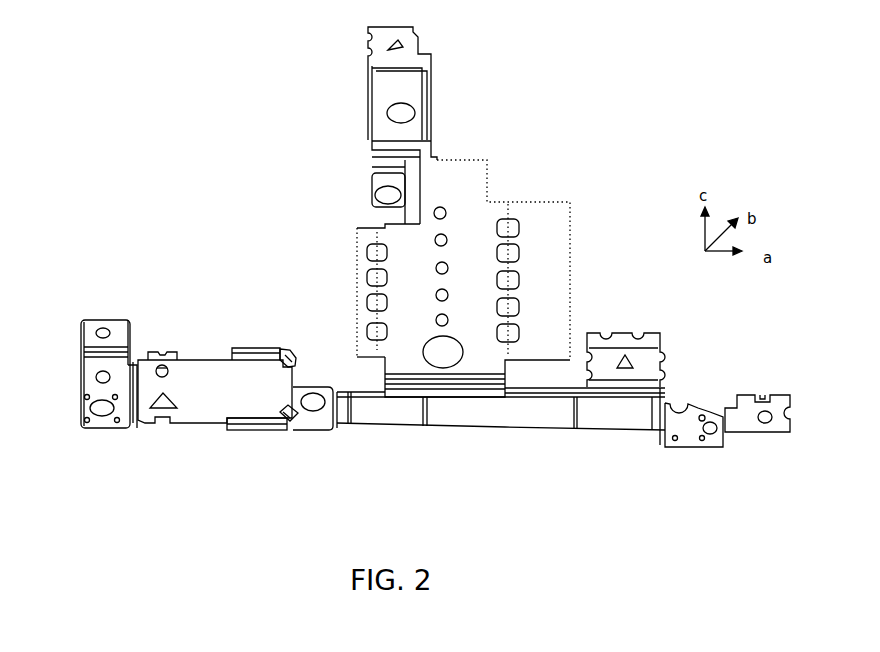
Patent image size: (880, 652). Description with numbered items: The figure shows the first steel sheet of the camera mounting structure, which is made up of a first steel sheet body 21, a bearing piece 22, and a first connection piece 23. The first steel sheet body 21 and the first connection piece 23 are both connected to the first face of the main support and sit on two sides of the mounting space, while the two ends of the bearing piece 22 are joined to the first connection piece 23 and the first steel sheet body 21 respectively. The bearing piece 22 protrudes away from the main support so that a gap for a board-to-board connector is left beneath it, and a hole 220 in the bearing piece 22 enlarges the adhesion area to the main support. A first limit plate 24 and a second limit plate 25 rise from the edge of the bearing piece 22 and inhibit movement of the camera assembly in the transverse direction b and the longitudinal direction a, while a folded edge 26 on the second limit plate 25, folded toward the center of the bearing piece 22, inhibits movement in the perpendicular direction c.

The first steel sheet body 21 is at (477, 193).
The bearing piece 22 is at (200, 395).
The first connection piece 23 is at (92, 385).
The first limit plate 24 is at (240, 352).
The second limit plate 25 is at (285, 423).
The folded edge 26 is at (285, 352).
The hole 220 is at (160, 366).